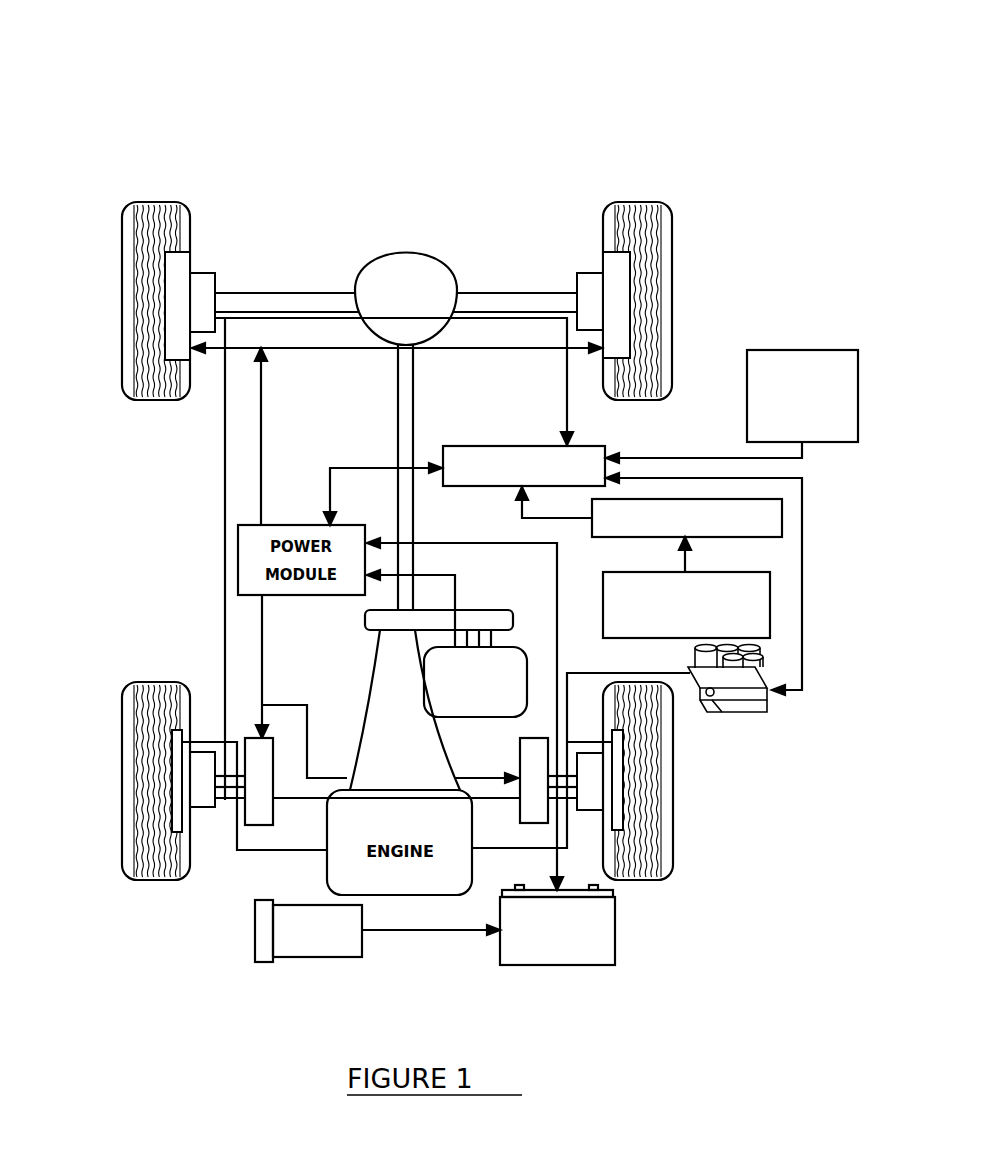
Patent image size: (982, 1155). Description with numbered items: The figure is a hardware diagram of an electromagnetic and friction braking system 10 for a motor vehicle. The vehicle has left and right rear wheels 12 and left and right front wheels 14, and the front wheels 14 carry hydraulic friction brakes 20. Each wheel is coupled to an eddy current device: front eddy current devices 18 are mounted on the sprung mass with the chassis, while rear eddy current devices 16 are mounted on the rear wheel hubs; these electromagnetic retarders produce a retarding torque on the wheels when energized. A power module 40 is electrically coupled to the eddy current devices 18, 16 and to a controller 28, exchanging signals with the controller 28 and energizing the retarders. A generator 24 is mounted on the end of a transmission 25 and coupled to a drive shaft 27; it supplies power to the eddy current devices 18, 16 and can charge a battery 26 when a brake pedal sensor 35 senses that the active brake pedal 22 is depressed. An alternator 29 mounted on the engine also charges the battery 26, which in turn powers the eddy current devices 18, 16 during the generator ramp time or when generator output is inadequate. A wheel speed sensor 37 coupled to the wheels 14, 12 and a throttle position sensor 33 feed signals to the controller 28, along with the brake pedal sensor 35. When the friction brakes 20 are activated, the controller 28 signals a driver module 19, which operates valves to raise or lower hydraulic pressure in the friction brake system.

The electromagnetic and friction braking system 10 is at (250, 72).
The rear wheels 12 is at (158, 202).
The front wheels 14 is at (150, 880).
The rear eddy current devices 16 is at (190, 258).
The front eddy current devices 18 is at (255, 737).
The driver module 19 is at (752, 718).
The hydraulic friction brakes 20 is at (172, 792).
The active brake pedal 22 is at (770, 612).
The generator 24 is at (515, 650).
The transmission 25 is at (360, 720).
The battery 26 is at (587, 965).
The drive shaft 27 is at (398, 412).
The controller 28 is at (522, 446).
The alternator 29 is at (327, 957).
The throttle position sensor 33 is at (803, 350).
The brake pedal sensor 35 is at (782, 521).
The wheel speed sensor 37 is at (215, 285).
The power module 40 is at (225, 565).